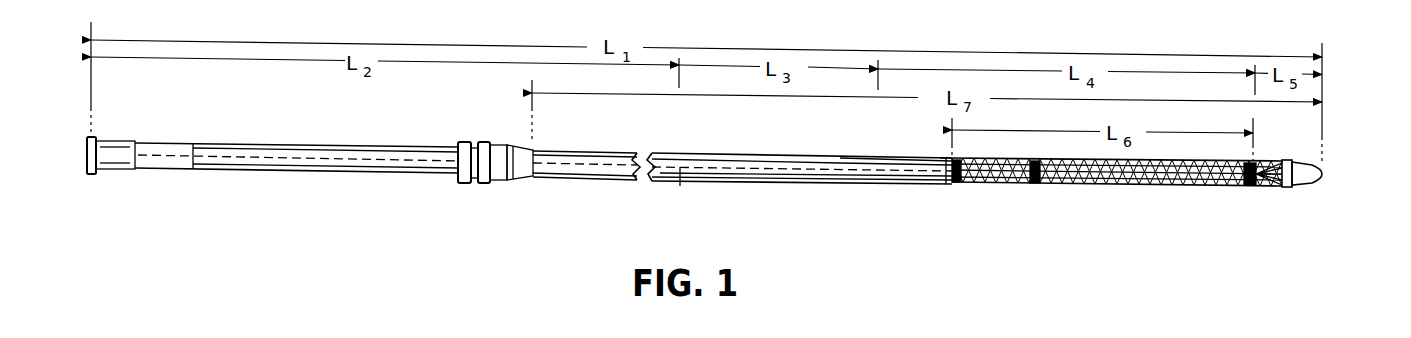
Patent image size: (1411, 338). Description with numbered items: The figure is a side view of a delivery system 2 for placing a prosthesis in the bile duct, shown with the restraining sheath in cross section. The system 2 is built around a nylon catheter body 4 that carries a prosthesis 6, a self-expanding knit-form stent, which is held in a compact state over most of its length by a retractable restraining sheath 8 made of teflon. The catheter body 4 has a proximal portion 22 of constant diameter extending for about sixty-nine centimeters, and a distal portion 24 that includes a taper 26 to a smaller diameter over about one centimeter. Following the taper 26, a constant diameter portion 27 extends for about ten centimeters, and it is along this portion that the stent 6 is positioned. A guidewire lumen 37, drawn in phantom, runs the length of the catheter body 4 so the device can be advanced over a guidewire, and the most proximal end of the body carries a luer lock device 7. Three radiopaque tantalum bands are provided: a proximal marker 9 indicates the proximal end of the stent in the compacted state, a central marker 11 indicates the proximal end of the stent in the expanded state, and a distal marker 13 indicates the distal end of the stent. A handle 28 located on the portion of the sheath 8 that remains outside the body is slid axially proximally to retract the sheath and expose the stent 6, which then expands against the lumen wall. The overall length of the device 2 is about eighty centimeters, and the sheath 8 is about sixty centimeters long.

The system 2 is at (1343, 71).
The catheter body 4 is at (818, 177).
The prosthesis 6 is at (1000, 186).
The luer lock device 7 is at (128, 168).
The restraining sheath 8 is at (947, 152).
The proximal marker 9 is at (954, 185).
The central marker 11 is at (1036, 185).
The distal marker 13 is at (1243, 187).
The proximal portion 22 is at (607, 190).
The distal portion 24 is at (871, 216).
The taper 26 is at (784, 160).
The constant diameter portion 27 is at (850, 162).
The handle 28 is at (500, 184).
The guidewire lumen 37 is at (673, 189).